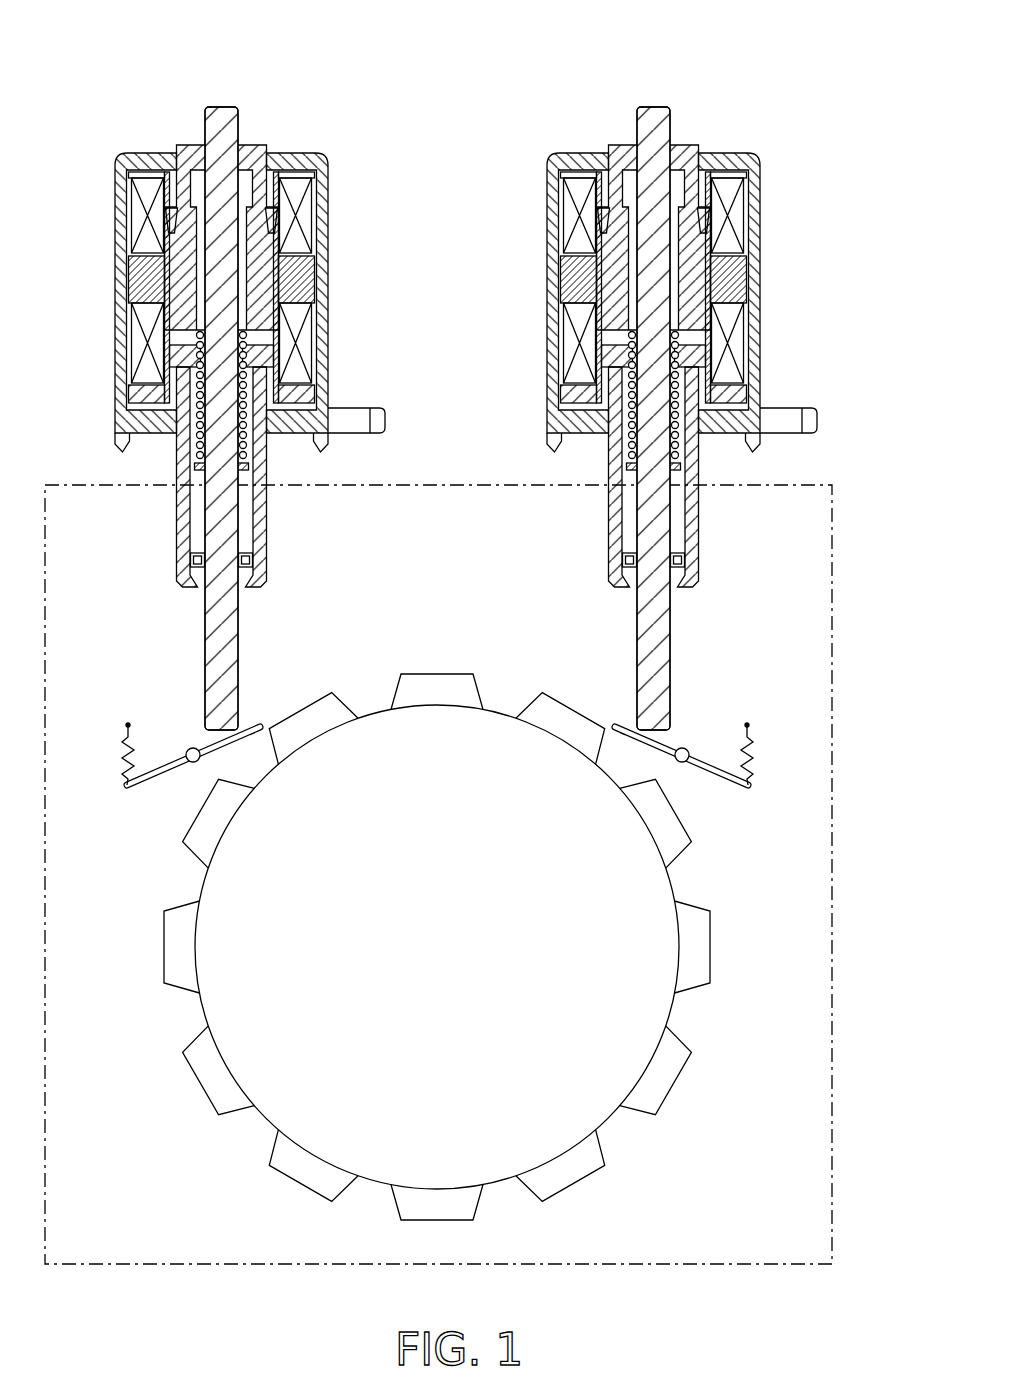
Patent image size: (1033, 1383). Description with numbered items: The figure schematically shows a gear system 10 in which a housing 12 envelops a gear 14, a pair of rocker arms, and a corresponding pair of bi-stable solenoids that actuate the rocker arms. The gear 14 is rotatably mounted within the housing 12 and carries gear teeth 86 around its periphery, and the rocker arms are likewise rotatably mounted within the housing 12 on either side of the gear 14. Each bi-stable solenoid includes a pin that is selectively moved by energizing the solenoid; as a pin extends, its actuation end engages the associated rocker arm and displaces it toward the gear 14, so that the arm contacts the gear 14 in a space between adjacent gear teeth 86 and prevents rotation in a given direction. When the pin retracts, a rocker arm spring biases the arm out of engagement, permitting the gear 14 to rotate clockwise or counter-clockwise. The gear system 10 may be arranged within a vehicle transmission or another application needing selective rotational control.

The gear system 10 is at (710, 30).
The housing 12 is at (437, 485).
The gear 14 is at (503, 708).
The gear teeth 86 is at (322, 710).